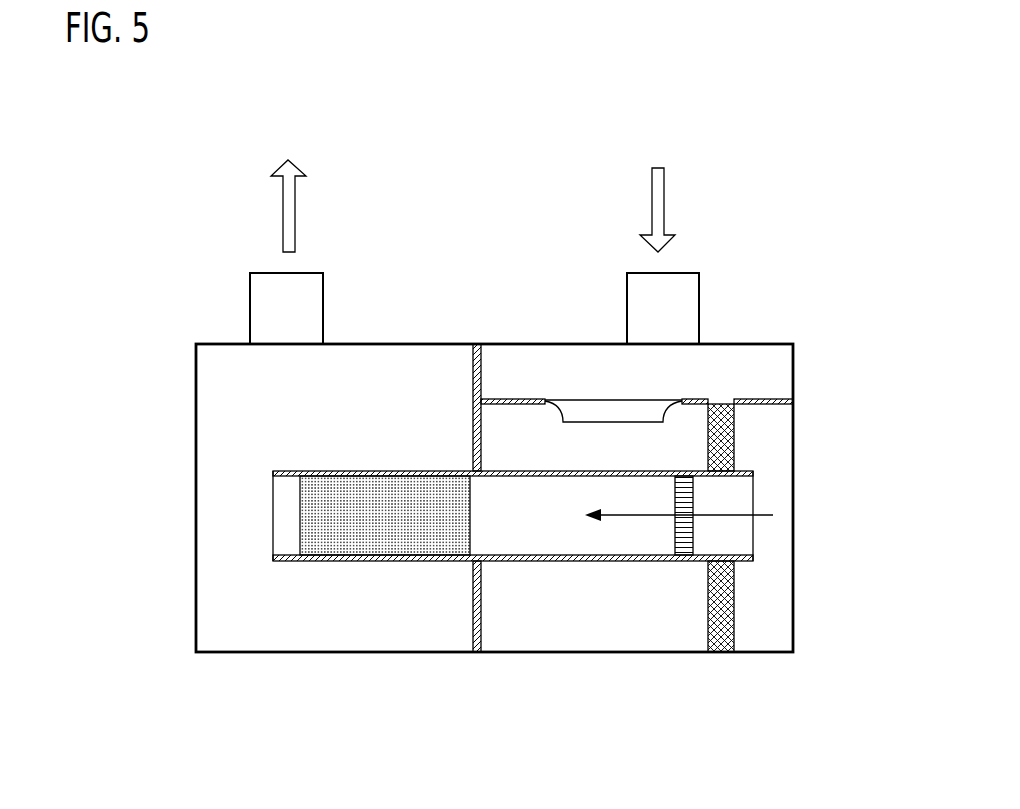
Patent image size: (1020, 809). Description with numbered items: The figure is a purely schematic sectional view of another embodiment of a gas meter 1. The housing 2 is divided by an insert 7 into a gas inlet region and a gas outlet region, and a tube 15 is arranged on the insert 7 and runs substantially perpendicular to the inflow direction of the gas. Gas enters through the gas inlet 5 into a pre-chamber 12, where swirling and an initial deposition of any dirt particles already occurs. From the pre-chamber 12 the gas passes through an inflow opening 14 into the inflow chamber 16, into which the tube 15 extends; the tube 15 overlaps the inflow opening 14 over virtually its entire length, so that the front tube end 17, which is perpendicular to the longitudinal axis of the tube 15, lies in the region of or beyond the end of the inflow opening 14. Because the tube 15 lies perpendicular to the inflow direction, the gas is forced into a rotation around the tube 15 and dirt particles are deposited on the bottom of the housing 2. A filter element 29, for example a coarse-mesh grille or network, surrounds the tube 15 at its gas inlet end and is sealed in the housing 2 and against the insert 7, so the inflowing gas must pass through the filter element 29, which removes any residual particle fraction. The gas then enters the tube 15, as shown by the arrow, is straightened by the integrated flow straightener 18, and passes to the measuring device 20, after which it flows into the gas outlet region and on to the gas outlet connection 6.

The gas meter 1 is at (720, 135).
The housing 2 is at (768, 345).
The gas inlet 5 is at (703, 290).
The gas outlet connection 6 is at (324, 297).
The insert 7 is at (473, 380).
The pre-chamber 12 is at (526, 367).
The inflow opening 14 is at (592, 418).
The tube 15 is at (564, 539).
The inflow chamber 16 is at (601, 636).
The front tube end 17 is at (750, 473).
The flow straightener 18 is at (683, 552).
The measuring device 20 is at (377, 546).
The filter element 29 is at (733, 627).